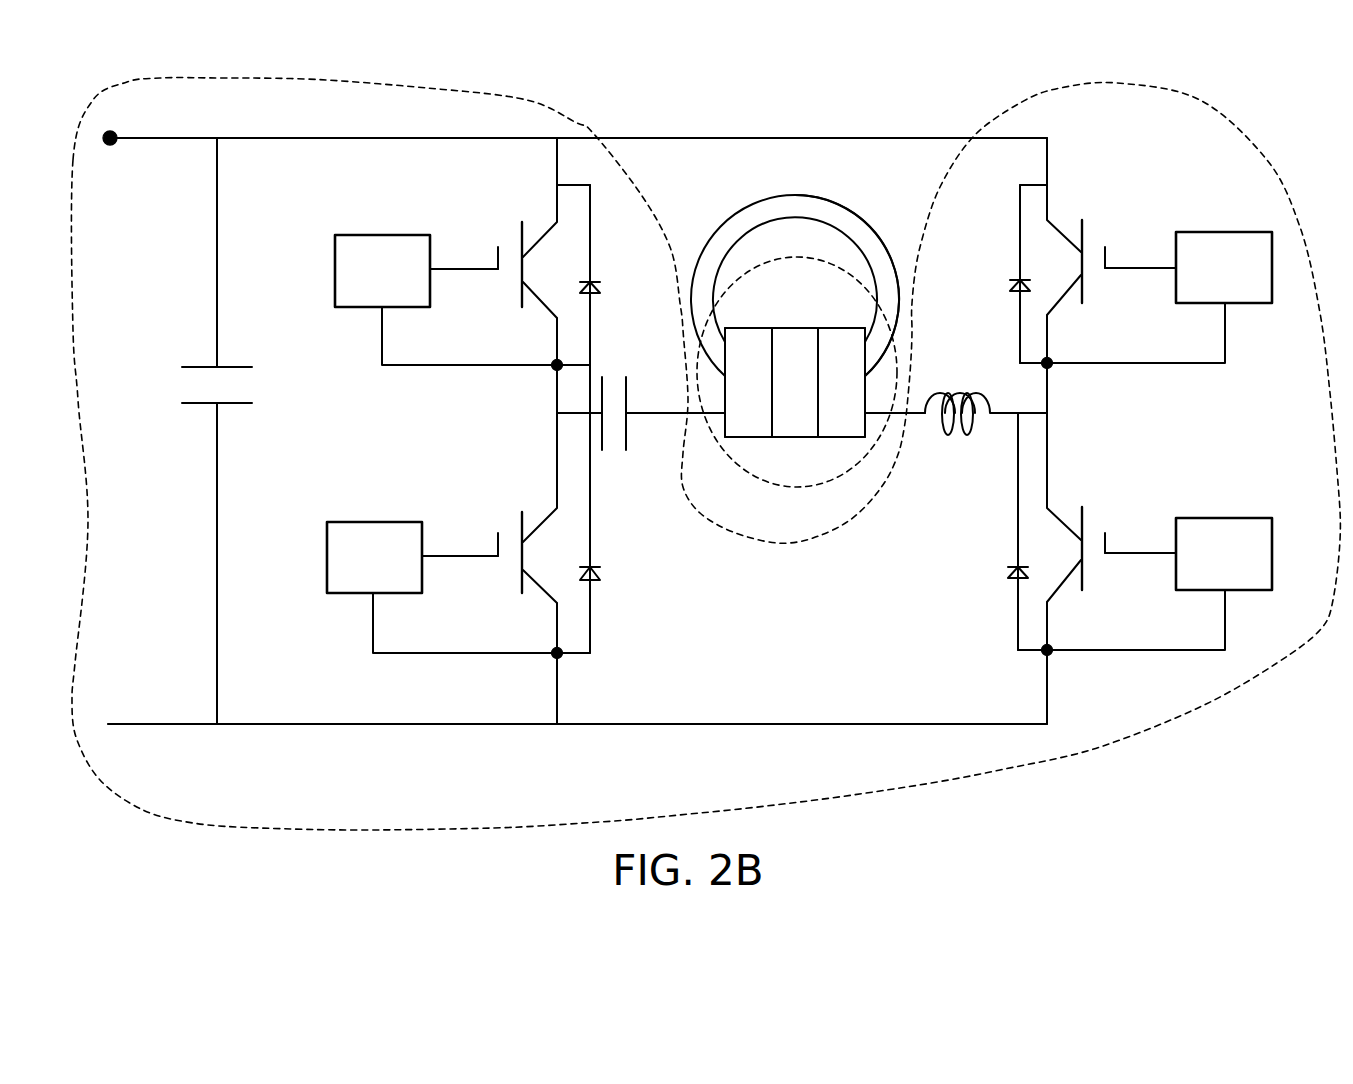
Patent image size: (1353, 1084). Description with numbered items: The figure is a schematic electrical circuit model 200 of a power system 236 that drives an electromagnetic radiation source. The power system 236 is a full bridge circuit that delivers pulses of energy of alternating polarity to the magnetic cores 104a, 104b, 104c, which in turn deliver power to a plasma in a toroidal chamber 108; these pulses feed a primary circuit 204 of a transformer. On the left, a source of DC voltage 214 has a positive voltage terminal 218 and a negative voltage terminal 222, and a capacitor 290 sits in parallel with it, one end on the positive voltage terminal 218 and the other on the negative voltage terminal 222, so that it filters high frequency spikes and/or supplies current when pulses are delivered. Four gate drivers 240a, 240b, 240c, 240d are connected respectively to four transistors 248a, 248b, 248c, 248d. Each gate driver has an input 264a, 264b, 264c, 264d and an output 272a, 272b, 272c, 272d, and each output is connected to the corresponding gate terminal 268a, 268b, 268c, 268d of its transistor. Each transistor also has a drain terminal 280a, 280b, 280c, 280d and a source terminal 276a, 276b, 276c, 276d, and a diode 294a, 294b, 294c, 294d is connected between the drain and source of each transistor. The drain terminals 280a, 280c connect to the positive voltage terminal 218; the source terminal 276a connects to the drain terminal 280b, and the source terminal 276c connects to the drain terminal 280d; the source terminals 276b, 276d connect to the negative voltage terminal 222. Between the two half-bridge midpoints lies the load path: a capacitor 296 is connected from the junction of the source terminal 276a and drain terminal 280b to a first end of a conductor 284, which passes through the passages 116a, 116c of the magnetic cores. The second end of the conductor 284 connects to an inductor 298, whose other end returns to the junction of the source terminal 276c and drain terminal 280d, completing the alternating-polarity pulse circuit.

The schematic electrical circuit model 200 is at (363, 747).
The primary circuit 204 is at (757, 476).
The magnetic core 104a is at (752, 347).
The magnetic core 104b is at (793, 418).
The magnetic core 104c is at (832, 416).
The toroidal chamber 108 is at (843, 342).
The passage 116a is at (722, 387).
The passage 116c is at (868, 390).
The source of DC voltage 214 is at (128, 303).
The positive voltage terminal 218 is at (115, 132).
The negative voltage terminal 222 is at (113, 726).
The power system 236 is at (528, 826).
The gate driver 240a is at (335, 267).
The gate driver 240b is at (327, 555).
The gate driver 240c is at (1198, 304).
The gate driver 240d is at (1198, 591).
The transistor 248a is at (510, 278).
The transistor 248b is at (510, 568).
The transistor 248c is at (1095, 270).
The transistor 248d is at (1095, 555).
The input 264a is at (381, 338).
The input 264b is at (372, 622).
The input 264c is at (1226, 337).
The input 264d is at (1226, 617).
The gate terminal 268a is at (496, 246).
The gate terminal 268b is at (494, 532).
The gate terminal 268c is at (1117, 267).
The gate terminal 268d is at (1117, 552).
The output 272a is at (456, 268).
The output 272b is at (442, 555).
The output 272c is at (1154, 267).
The output 272d is at (1154, 552).
The source terminal 276a is at (556, 342).
The source terminal 276b is at (556, 630).
The source terminal 276c is at (1046, 331).
The source terminal 276d is at (1046, 620).
The drain terminal 280a is at (543, 235).
The drain terminal 280b is at (537, 520).
The drain terminal 280c is at (1053, 233).
The drain terminal 280d is at (1053, 521).
The conductor 284 is at (908, 420).
The capacitor 290 is at (185, 365).
The diode 294a is at (598, 280).
The diode 294b is at (592, 582).
The diode 294c is at (1009, 287).
The diode 294d is at (1007, 575).
The capacitor 296 is at (626, 430).
The inductor 298 is at (964, 436).